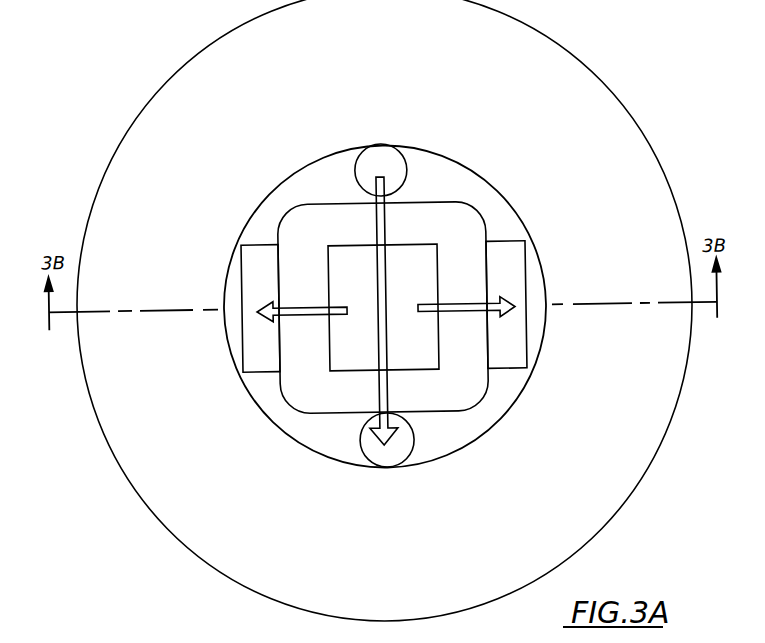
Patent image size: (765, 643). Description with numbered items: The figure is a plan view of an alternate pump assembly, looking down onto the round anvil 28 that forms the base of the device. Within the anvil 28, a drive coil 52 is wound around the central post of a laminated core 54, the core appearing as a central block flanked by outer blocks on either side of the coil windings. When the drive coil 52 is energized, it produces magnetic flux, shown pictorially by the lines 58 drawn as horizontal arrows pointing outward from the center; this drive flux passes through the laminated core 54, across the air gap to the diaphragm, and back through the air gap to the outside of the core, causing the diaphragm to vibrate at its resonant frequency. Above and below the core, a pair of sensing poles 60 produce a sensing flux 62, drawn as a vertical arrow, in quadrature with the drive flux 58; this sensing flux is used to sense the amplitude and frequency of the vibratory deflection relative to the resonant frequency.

The anvil 28 is at (145, 510).
The drive coil 52 is at (312, 283).
The laminated core 54 is at (266, 272).
The magnetic flux lines 58 is at (320, 316).
The sensing poles 60 is at (403, 165).
The sensing flux 62 is at (386, 227).